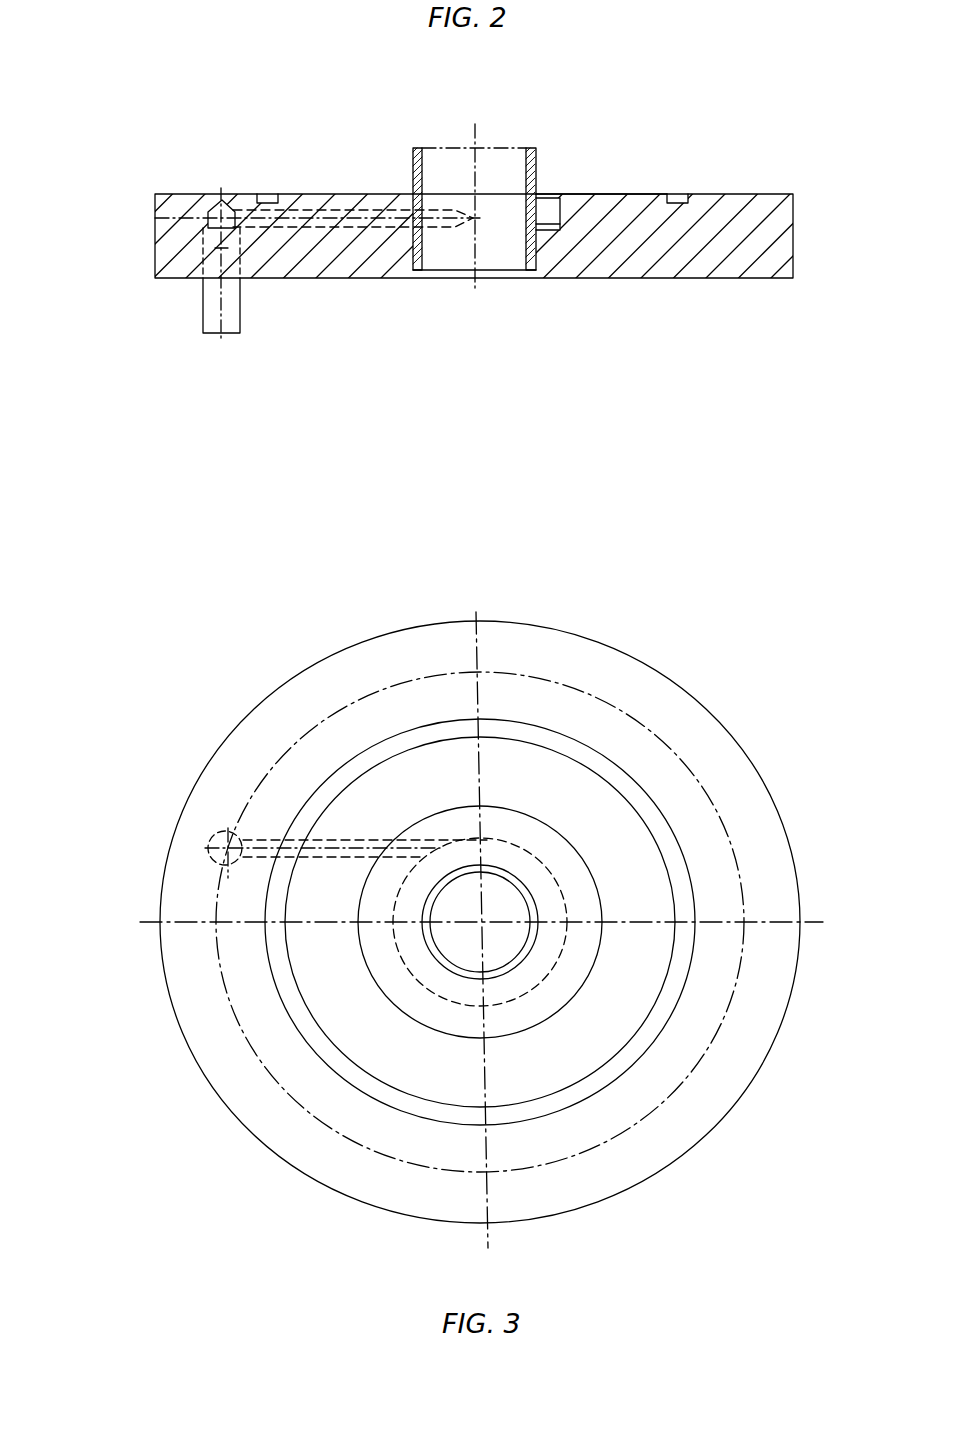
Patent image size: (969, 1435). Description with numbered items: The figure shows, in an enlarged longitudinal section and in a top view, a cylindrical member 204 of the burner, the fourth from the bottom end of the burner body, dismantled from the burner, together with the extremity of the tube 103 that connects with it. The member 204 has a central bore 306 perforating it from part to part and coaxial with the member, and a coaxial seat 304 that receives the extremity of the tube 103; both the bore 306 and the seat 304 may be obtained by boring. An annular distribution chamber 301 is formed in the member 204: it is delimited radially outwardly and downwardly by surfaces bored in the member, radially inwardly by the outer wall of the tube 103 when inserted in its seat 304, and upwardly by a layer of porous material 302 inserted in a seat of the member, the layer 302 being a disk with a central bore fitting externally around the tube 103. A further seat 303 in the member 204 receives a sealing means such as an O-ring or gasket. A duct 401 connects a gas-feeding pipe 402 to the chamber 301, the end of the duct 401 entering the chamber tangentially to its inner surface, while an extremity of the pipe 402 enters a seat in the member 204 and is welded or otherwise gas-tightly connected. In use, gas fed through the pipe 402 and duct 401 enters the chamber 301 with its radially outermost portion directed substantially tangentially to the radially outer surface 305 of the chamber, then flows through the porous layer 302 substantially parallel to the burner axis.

In FIG. 2, the tube 103 is at (412, 173).
In FIG. 3, the tube 103 is at (460, 963).
In FIG. 2, the cylindrical member 204 is at (783, 247).
In FIG. 2, the annular distribution chamber 301 is at (577, 194).
In FIG. 3, the annular distribution chamber 301 is at (459, 988).
In FIG. 3, the layer of porous material 302 is at (550, 998).
In FIG. 2, the seat for sealing means 303 is at (674, 193).
In FIG. 3, the seat for sealing means 303 is at (342, 783).
In FIG. 2, the seat 304 is at (536, 224).
In FIG. 2, the radially outer surface 305 is at (548, 215).
In FIG. 2, the central bore 306 is at (486, 280).
In FIG. 2, the duct 401 is at (346, 208).
In FIG. 3, the duct 401 is at (327, 853).
In FIG. 2, the gas-feeding pipe 402 is at (209, 333).